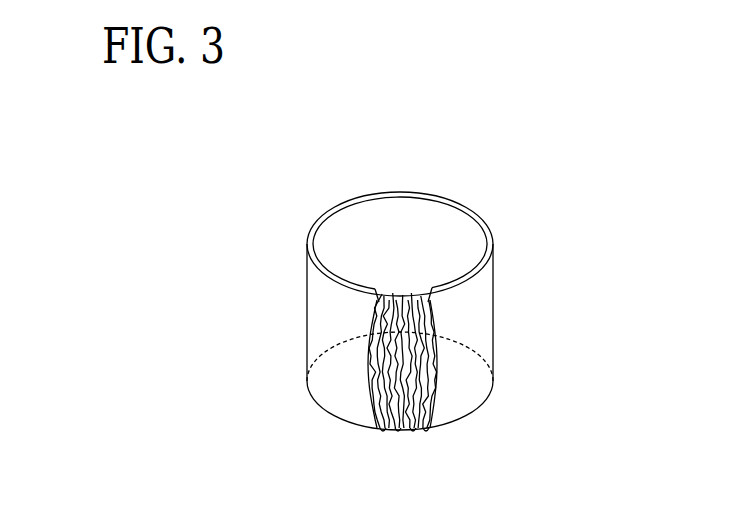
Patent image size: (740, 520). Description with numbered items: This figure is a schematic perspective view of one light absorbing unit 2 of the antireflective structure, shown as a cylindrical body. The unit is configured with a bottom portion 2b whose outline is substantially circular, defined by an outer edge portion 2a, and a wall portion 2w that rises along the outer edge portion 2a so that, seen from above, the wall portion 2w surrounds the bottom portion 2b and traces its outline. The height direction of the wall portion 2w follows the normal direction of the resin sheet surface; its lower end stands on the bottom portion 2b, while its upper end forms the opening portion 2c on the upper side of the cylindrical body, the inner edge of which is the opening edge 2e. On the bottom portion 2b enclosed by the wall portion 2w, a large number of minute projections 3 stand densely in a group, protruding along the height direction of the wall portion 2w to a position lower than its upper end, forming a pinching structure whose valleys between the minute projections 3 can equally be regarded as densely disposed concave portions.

The light absorbing unit 2 is at (407, 285).
The outer edge portion 2a is at (340, 418).
The bottom portion 2b is at (476, 413).
The opening portion 2c is at (398, 228).
The opening edge 2e is at (325, 214).
The wall portion 2w is at (316, 320).
The minute projections 3 is at (405, 432).